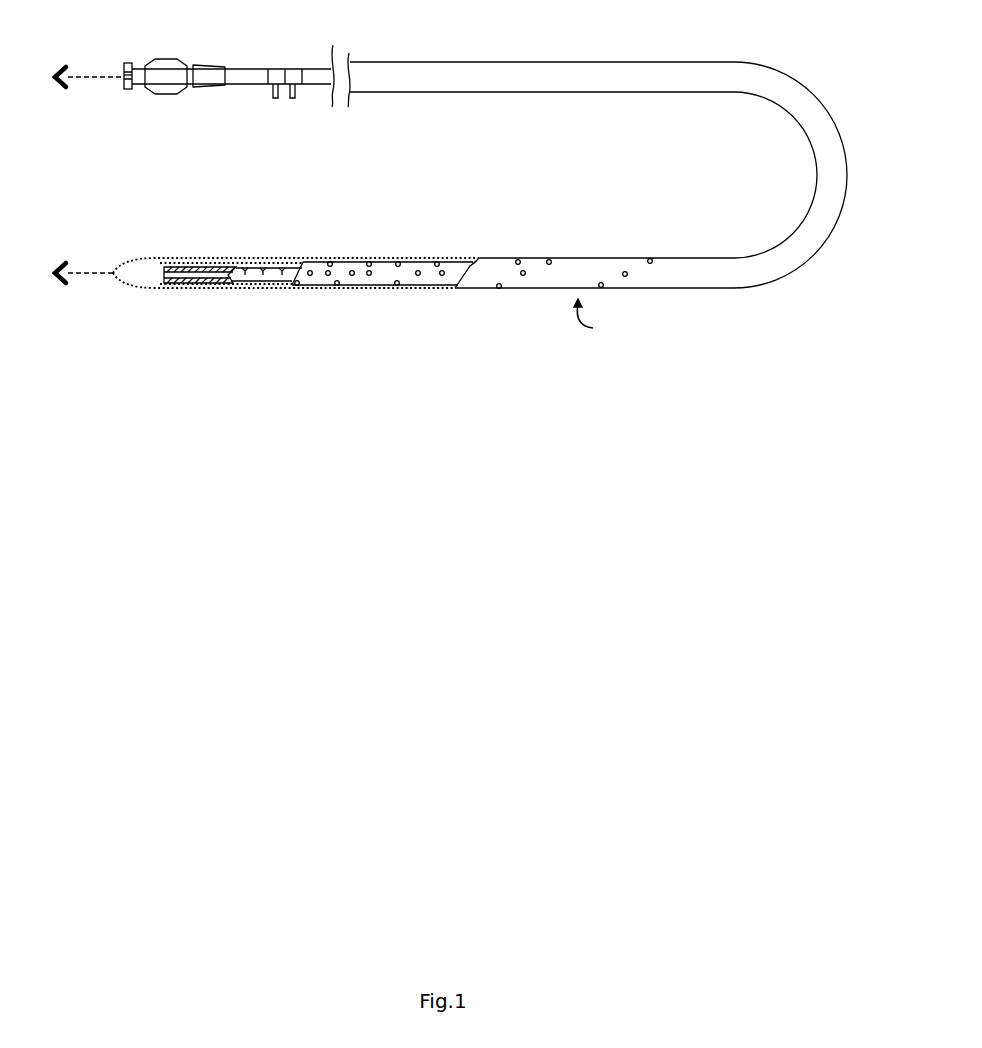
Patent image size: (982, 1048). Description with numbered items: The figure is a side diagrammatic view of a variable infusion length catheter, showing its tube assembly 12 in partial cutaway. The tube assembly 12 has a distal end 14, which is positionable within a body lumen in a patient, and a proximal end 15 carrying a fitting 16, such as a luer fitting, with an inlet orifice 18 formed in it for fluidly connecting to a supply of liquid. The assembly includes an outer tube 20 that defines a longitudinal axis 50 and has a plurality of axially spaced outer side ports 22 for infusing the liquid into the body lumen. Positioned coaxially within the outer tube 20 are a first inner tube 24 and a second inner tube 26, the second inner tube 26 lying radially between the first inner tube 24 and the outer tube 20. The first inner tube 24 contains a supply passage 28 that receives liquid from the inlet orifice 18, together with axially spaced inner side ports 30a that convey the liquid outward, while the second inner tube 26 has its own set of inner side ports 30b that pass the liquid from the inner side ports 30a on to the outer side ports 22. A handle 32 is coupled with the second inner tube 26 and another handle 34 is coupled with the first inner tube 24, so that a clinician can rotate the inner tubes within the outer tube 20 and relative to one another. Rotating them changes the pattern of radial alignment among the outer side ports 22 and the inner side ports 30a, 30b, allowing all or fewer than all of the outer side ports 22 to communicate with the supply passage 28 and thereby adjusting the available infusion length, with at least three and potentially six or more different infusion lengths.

The tube assembly 12 is at (596, 320).
The distal end 14 is at (115, 278).
The proximal end 15 is at (128, 90).
The fitting 16 is at (128, 62).
The inlet orifice 18 is at (124, 77).
The outer tube 20 is at (322, 68).
The outer side ports 22 is at (523, 270).
The first inner tube 24 is at (269, 68).
The second inner tube 26 is at (294, 68).
The supply passage 28 is at (170, 268).
The inner side ports 30a is at (262, 268).
The inner side ports 30b is at (348, 271).
The handle 32 is at (293, 99).
The handle 34 is at (275, 99).
The longitudinal axis 50 is at (76, 278).